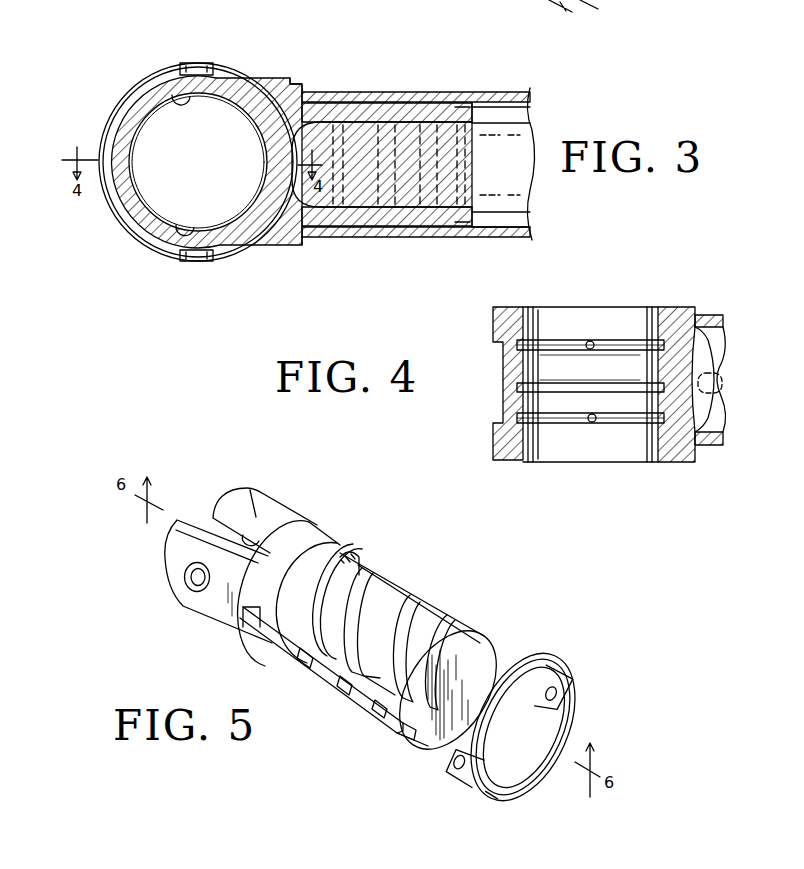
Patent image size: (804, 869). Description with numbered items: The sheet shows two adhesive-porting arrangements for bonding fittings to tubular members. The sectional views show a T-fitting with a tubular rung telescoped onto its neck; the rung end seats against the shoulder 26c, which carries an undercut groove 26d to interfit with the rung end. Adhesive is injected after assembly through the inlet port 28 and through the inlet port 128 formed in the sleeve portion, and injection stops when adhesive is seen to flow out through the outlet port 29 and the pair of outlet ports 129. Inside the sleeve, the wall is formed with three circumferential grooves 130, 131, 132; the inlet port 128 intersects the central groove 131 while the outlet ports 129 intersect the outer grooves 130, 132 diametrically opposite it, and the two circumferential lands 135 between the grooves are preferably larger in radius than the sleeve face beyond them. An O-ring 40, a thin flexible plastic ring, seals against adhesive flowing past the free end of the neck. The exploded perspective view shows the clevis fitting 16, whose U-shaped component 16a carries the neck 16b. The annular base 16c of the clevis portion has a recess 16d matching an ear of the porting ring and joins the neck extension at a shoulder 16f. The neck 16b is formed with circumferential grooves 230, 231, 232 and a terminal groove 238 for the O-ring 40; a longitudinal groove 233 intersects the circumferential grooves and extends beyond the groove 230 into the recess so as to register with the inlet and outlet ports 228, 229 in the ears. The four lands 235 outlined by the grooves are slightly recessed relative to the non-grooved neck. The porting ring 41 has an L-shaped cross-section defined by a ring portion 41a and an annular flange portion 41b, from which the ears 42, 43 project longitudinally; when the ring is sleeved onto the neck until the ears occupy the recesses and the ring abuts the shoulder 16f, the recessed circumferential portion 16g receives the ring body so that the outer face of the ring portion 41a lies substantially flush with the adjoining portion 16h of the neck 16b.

In FIG. 3, the shoulder 26c is at (307, 87).
In FIG. 3, the undercut groove 26d is at (287, 90).
In FIG. 3, the inlet port 28 is at (387, 90).
In FIG. 3, the outlet port 29 is at (385, 237).
In FIG. 3, the O-ring 40 is at (455, 233).
In FIG. 3, the inlet port 128 is at (193, 56).
In FIG. 3, the outlet ports 129 is at (193, 262).
In FIG. 4, the outlet ports 129 is at (590, 340).
In FIG. 3, the circumferential groove 130 is at (166, 240).
In FIG. 4, the circumferential groove 130 is at (548, 343).
In FIG. 3, the circumferential groove 131 is at (172, 92).
In FIG. 4, the circumferential groove 131 is at (562, 383).
In FIG. 4, the circumferential groove 132 is at (562, 420).
In FIG. 4, the circumferential lands 135 is at (612, 363).
In FIG. 5, the clevis fitting 16 is at (359, 597).
In FIG. 5, the U-shaped component 16a is at (247, 474).
In FIG. 5, the neck 16b is at (473, 619).
In FIG. 5, the annular base 16c is at (313, 533).
In FIG. 5, the recess 16d is at (253, 612).
In FIG. 5, the shoulder 16f is at (352, 547).
In FIG. 5, the circumferential portion 16g is at (348, 550).
In FIG. 5, the adjoining portion of the neck 16h is at (297, 620).
In FIG. 5, the circumferential groove 230 is at (365, 572).
In FIG. 5, the lands 235 is at (390, 600).
In FIG. 5, the circumferential groove 231 is at (422, 600).
In FIG. 5, the circumferential groove 232 is at (462, 610).
In FIG. 5, the longitudinal groove 233 is at (340, 667).
In FIG. 5, the terminal groove 238 is at (403, 733).
In FIG. 5, the porting ring 41 is at (498, 713).
In FIG. 5, the ring portion 41a is at (552, 662).
In FIG. 5, the annular flange portion 41b is at (477, 772).
In FIG. 5, the ear 42 is at (431, 769).
In FIG. 5, the ear 43 is at (524, 727).
In FIG. 5, the inlet port 228 is at (450, 751).
In FIG. 5, the outlet port 229 is at (565, 670).